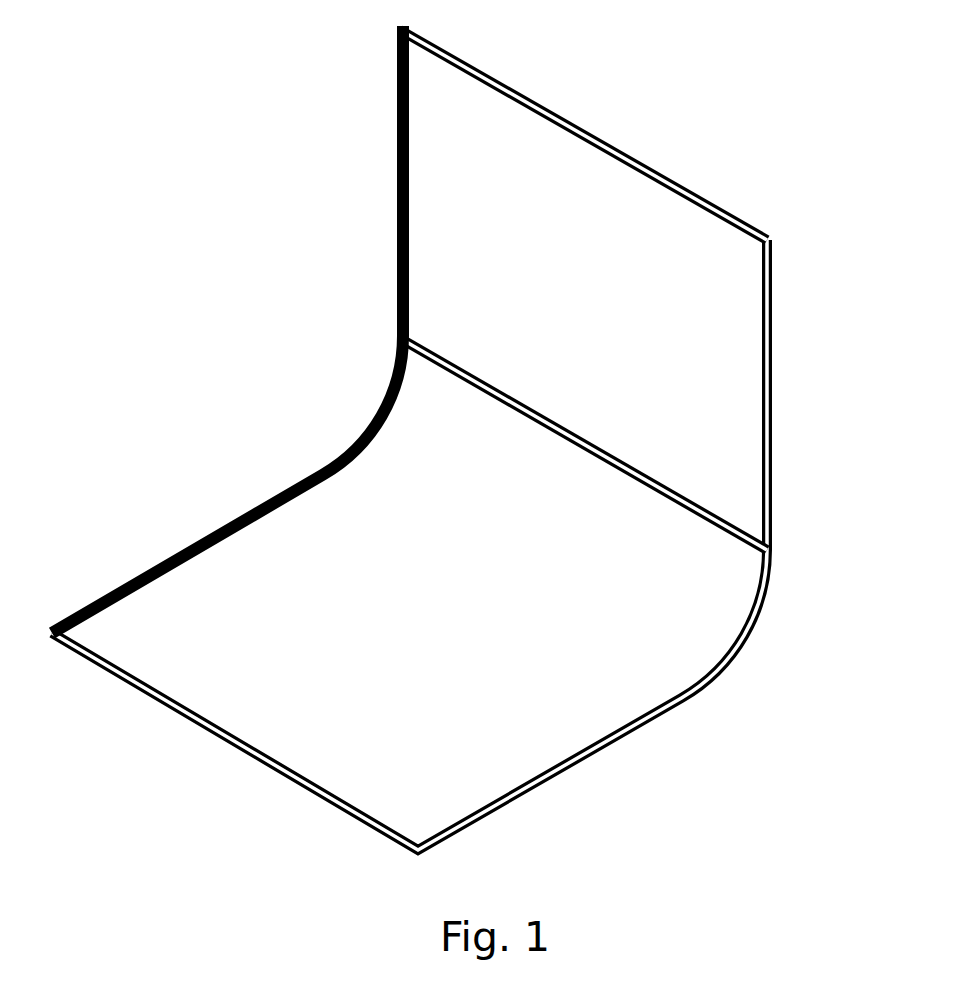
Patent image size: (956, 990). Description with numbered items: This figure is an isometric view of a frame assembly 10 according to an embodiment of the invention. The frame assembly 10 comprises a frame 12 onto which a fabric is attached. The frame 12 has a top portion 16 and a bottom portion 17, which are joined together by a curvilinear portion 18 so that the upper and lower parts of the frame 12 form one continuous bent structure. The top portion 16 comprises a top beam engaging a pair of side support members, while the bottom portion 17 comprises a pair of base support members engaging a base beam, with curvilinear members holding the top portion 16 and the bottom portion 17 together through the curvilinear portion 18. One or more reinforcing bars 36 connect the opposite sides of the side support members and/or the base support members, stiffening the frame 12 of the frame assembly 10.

The frame assembly 10 is at (700, 707).
The frame 12 is at (637, 162).
The top portion 16 is at (438, 170).
The bottom portion 17 is at (408, 446).
The curvilinear portion 18 is at (247, 668).
The reinforcing bar 36 is at (637, 468).